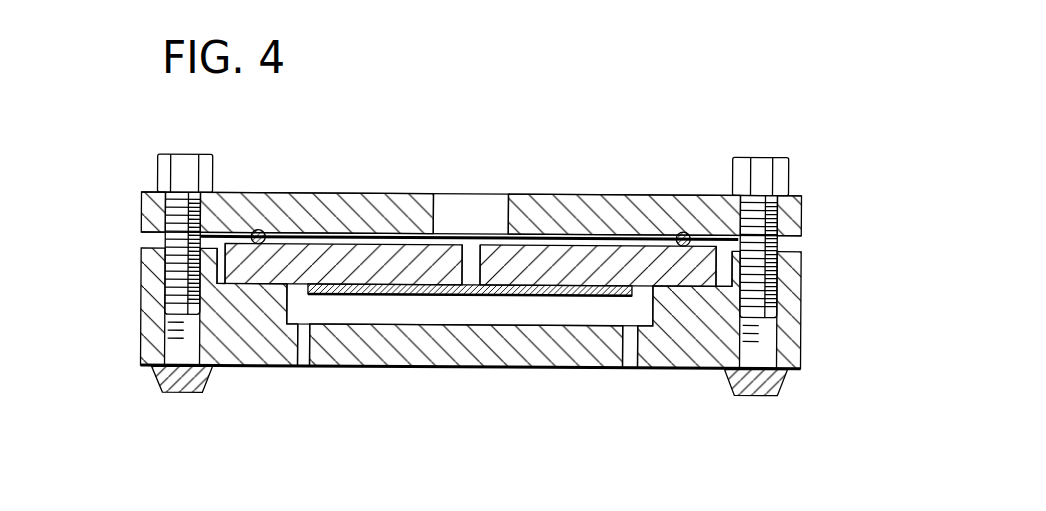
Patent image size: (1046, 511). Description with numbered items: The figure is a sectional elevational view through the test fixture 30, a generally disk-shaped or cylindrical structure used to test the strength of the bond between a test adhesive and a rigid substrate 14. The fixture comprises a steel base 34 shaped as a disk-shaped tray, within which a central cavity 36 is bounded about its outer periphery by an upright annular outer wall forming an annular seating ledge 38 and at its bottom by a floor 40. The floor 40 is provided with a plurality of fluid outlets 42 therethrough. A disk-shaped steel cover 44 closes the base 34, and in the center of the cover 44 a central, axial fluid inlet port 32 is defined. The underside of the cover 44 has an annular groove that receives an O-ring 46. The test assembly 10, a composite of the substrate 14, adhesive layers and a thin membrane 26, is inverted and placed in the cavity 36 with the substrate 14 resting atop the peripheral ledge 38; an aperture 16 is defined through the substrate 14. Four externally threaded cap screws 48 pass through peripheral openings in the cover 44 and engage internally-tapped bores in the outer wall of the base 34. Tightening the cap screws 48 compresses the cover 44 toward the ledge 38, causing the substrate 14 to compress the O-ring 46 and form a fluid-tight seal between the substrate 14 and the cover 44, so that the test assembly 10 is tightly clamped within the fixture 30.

The test assembly 10 is at (392, 297).
The rigid substrate 14 is at (336, 262).
The aperture 16 is at (475, 268).
The membrane 26 is at (557, 296).
The test fixture 30 is at (199, 424).
The fluid inlet port 32 is at (508, 212).
The base 34 is at (141, 298).
The central cavity 36 is at (490, 307).
The annular seating ledge 38 is at (247, 277).
The floor 40 is at (407, 367).
The fluid outlets 42 is at (304, 340).
The cover 44 is at (580, 193).
The O-ring 46 is at (256, 231).
The cap screws 48 is at (180, 170).